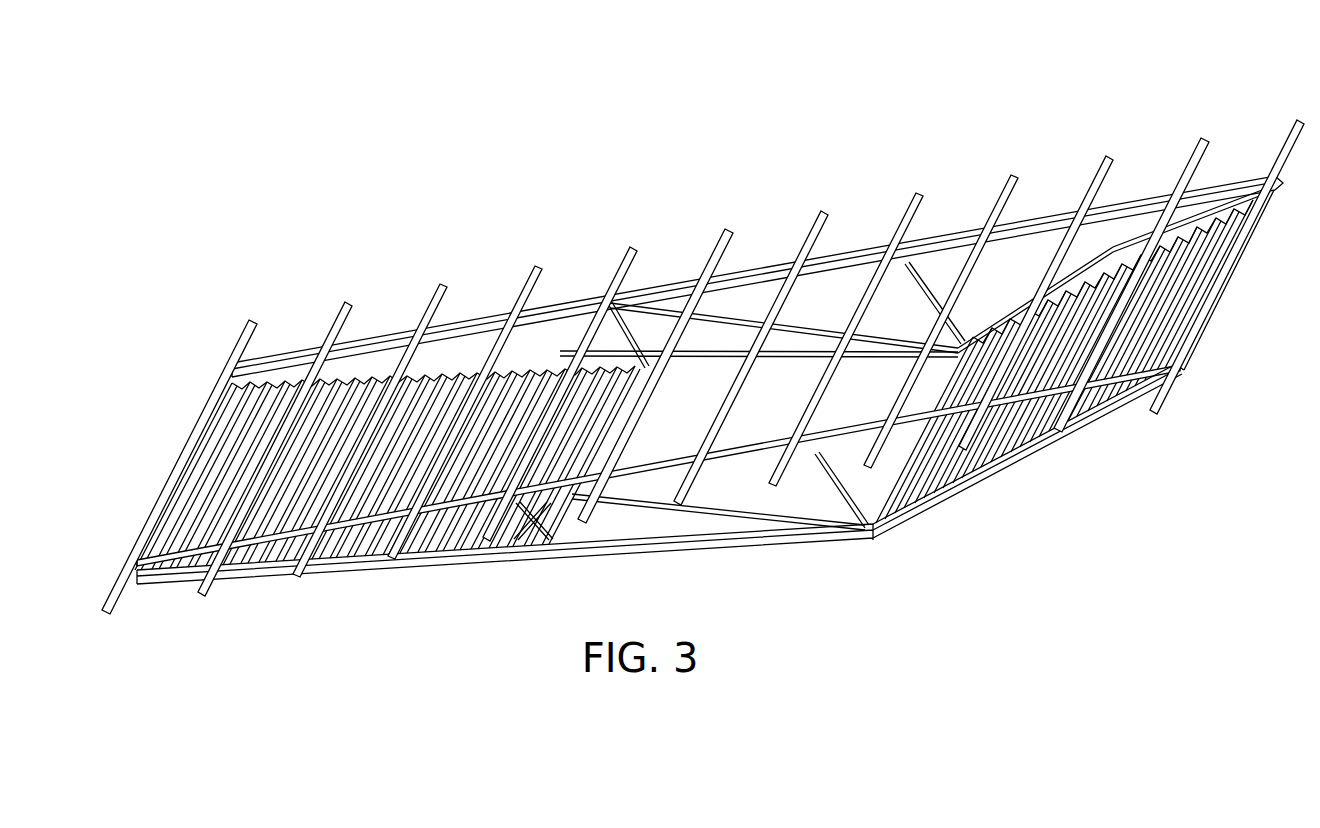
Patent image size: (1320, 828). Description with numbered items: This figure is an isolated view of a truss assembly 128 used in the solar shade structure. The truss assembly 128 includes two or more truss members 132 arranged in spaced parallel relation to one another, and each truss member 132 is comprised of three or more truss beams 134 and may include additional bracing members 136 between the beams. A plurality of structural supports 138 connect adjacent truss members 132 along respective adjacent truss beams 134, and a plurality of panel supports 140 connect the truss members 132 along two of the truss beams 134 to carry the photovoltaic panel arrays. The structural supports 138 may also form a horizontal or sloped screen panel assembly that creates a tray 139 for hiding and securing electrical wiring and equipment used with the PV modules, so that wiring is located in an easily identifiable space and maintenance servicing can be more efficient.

The truss assembly 128 is at (621, 129).
The truss member 132 is at (1043, 203).
The truss beam 134 is at (850, 250).
The bracing member 136 is at (637, 325).
The structural support 138 is at (287, 360).
The tray 139 is at (448, 392).
The panel support 140 is at (352, 305).